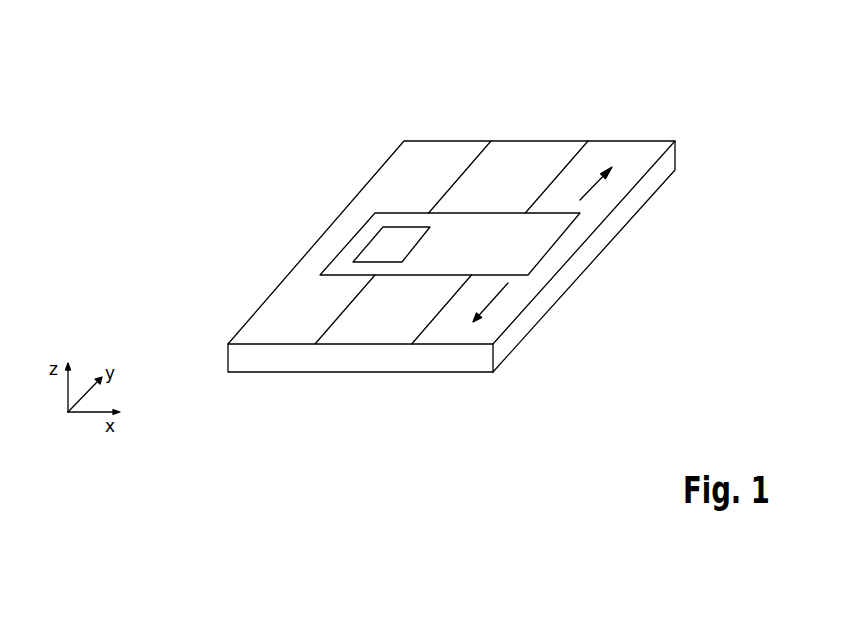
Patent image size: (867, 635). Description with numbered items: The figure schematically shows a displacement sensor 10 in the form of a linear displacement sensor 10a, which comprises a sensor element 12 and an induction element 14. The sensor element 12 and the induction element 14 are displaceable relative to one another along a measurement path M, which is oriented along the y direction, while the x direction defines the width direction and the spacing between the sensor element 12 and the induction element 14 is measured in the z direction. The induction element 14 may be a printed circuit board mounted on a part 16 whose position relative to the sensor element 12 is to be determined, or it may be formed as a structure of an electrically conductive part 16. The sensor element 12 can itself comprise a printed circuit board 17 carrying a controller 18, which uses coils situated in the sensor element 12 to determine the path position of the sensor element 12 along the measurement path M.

The displacement sensor 10 is at (656, 69).
The linear displacement sensor 10a is at (682, 110).
The sensor element 12 is at (342, 268).
The induction element 14 is at (523, 157).
The part 16 is at (517, 335).
The printed circuit board 17 is at (537, 242).
The controller 18 is at (376, 246).
The measurement path M is at (592, 188).